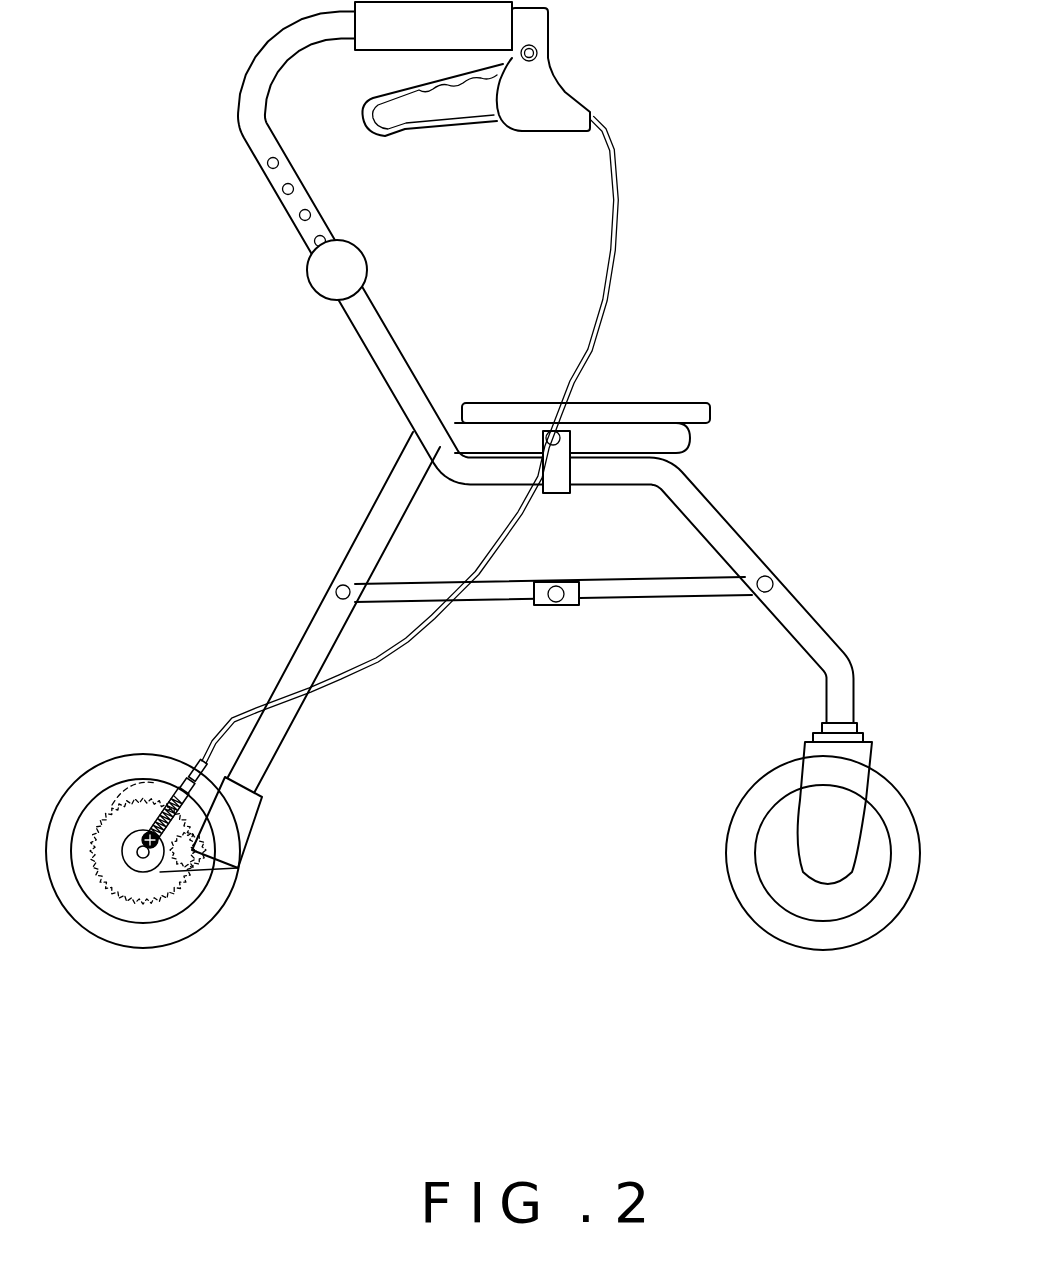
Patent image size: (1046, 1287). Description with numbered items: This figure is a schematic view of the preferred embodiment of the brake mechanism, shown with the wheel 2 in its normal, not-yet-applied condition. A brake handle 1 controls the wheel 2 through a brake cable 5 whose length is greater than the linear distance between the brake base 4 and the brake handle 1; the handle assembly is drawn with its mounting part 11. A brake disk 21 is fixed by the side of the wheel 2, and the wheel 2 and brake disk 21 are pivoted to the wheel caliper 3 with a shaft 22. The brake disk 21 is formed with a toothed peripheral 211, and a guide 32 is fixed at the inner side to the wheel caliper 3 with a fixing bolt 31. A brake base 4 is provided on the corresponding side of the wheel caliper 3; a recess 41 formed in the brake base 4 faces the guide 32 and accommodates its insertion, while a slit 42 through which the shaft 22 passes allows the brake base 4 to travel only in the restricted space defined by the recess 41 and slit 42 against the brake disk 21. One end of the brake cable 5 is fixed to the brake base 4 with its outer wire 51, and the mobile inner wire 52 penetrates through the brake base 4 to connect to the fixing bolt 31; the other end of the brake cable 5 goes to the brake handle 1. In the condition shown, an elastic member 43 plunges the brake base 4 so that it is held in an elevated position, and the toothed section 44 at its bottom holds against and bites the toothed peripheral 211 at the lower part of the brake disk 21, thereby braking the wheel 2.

The brake handle 1 is at (470, 133).
The lever bracket 11 is at (547, 83).
The wheel 2 is at (143, 831).
The brake disk 21 is at (112, 830).
The toothed peripheral 211 is at (125, 800).
The shaft 22 is at (147, 860).
The wheel caliper 3 is at (242, 817).
The fixing bolt 31 is at (158, 847).
The guide 32 is at (157, 858).
The brake base 4 is at (140, 913).
The recess 41 is at (163, 832).
The slit 42 is at (143, 830).
The elastic member 43 is at (178, 805).
The toothed section 44 is at (112, 903).
The brake cable 5 is at (386, 552).
The outer wire 51 is at (330, 690).
The inner wire 52 is at (155, 857).